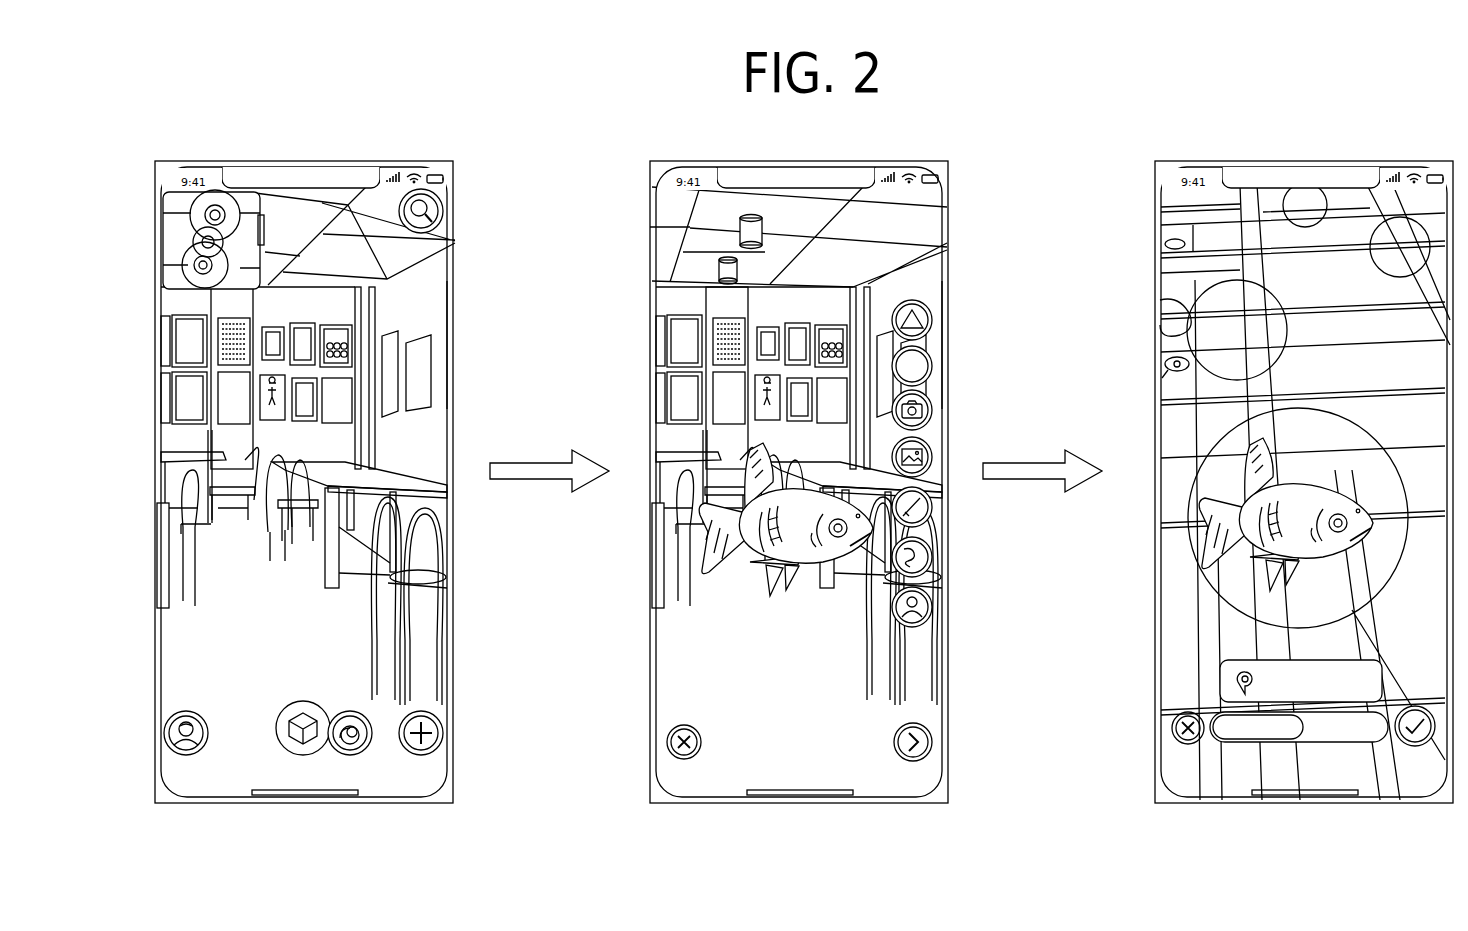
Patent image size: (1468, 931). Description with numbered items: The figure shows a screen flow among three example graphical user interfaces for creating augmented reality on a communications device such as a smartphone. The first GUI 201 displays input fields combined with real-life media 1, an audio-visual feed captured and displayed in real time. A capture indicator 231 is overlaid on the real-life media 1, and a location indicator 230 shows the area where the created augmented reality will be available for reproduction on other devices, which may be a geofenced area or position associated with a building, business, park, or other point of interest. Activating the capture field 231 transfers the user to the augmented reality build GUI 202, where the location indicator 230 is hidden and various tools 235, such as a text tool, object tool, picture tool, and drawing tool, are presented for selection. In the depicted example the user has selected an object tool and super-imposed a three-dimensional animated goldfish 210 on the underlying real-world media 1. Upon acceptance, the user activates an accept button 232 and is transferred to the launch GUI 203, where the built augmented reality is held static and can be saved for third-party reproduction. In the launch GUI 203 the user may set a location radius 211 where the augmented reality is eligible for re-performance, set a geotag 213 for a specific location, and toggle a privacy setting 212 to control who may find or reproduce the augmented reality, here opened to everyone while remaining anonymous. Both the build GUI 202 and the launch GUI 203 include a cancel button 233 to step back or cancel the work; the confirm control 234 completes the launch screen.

The real-life media 1 is at (415, 290).
The GUI 201 is at (301, 803).
The augmented reality build GUI 202 is at (818, 803).
The launch GUI 203 is at (1279, 802).
The 3D animated goldfish 210 is at (822, 560).
The location radius 211 is at (1190, 476).
The privacy setting 212 is at (1230, 740).
The geotag 213 is at (1230, 672).
The location indicator 230 is at (160, 232).
The capture indicator 231 is at (297, 705).
The accept button 232 is at (918, 754).
The cancel button 233 is at (668, 750).
The confirm button 234 is at (1420, 746).
The tools 235 is at (933, 452).